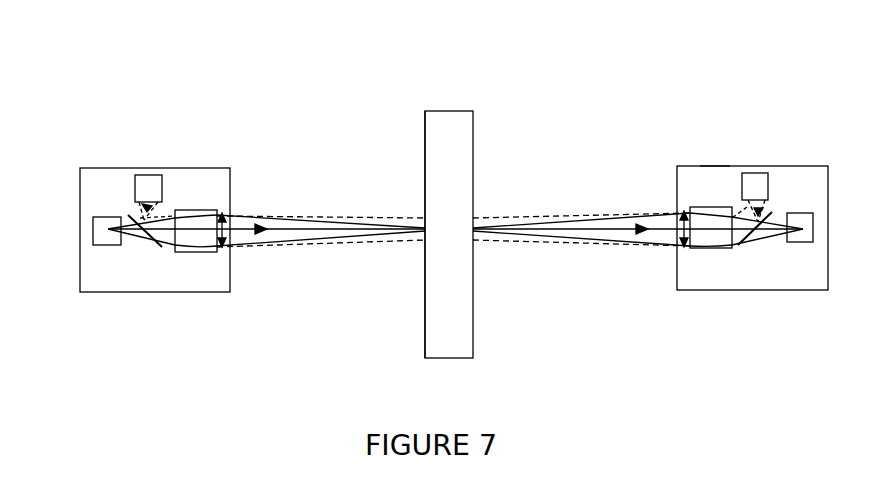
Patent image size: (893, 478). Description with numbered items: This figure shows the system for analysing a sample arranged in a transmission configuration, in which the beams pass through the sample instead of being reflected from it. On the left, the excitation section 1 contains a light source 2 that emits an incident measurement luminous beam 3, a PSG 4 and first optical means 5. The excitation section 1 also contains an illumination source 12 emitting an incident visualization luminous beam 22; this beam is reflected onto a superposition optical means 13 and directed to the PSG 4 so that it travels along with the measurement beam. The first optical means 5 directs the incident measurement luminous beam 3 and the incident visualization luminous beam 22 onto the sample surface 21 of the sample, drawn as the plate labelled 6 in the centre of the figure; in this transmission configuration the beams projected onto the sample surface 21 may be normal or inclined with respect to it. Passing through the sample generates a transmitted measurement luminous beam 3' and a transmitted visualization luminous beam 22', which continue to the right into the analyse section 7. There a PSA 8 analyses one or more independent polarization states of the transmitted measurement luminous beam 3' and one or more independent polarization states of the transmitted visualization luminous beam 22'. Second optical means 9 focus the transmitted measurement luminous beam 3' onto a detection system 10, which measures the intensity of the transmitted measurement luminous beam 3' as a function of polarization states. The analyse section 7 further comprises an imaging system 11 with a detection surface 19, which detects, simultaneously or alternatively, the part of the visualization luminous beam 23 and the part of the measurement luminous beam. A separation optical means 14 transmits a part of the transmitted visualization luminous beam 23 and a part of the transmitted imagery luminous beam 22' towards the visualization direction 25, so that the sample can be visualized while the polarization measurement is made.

The excitation section 1 is at (103, 168).
The light source 2 is at (93, 230).
The incident measurement luminous beam 3 is at (266, 266).
The transmitted measurement luminous beam 3' is at (638, 196).
The PSG 4 is at (183, 210).
The first optical means 5 is at (232, 214).
The transparent plate / object 6 is at (443, 111).
The analyse section 7 is at (777, 290).
The PSA 8 is at (703, 248).
The second optical means 9 is at (690, 248).
The detection system 10 is at (803, 213).
The imaging system 11 is at (747, 207).
The illumination source 12 is at (153, 175).
The superposition optical means 13 is at (158, 250).
The separation optical means 14 is at (747, 245).
The detection surface 19 is at (765, 173).
The sample surface 21 is at (425, 313).
The incident visualization luminous beam 22 is at (321, 182).
The transmitted visualization luminous beam 22' is at (581, 281).
The transmitted visualization luminous beam part 23 is at (715, 166).
The visualization direction 25 is at (770, 212).